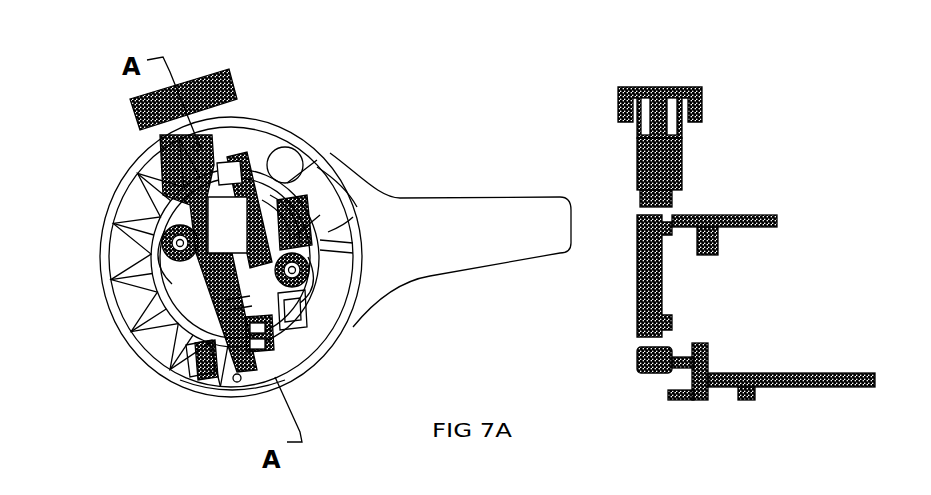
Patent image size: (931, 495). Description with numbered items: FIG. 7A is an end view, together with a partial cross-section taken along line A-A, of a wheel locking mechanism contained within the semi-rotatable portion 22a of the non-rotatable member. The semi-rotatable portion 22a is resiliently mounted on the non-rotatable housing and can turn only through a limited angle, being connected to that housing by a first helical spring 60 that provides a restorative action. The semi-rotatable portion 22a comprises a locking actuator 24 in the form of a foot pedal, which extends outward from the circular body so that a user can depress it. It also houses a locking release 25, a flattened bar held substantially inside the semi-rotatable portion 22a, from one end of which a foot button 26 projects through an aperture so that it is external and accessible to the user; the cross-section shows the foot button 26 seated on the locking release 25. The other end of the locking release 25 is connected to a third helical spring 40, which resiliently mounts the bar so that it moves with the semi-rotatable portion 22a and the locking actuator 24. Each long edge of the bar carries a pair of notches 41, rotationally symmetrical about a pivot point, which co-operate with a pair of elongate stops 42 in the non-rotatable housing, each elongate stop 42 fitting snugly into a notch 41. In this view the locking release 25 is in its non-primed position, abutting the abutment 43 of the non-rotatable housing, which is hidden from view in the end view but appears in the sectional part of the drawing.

The semi-rotatable portion 22a is at (118, 200).
The locking actuator 24 is at (452, 198).
The locking release 25 is at (150, 133).
The foot button 26 is at (222, 72).
The third helical spring 40 is at (200, 350).
The notches 41 is at (113, 238).
The elongate stops 42 is at (110, 303).
The abutment 43 is at (700, 400).
The first helical spring 60 is at (115, 268).